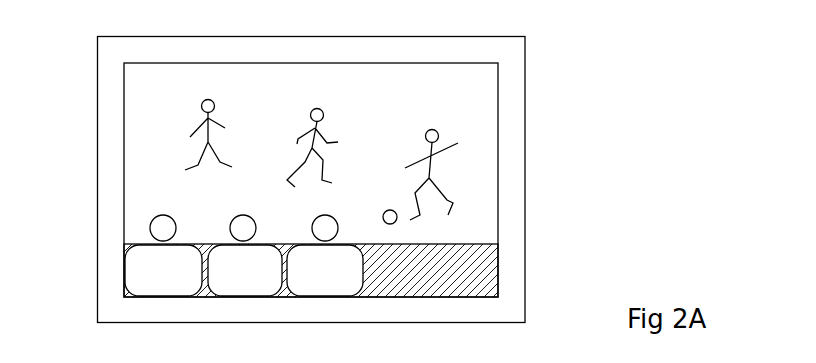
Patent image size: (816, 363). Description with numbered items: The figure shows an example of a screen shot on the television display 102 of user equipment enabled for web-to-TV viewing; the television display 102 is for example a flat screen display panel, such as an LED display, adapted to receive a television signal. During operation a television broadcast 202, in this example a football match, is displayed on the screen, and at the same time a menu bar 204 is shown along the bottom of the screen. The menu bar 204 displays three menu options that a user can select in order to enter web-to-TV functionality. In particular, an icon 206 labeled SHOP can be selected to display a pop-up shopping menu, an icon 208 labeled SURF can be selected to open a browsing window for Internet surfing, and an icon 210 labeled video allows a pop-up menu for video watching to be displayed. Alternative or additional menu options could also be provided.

The television display 102 is at (512, 83).
The television broadcast 202 is at (147, 113).
The menu bar 204 is at (462, 273).
The icon labeled SHOP 206 is at (172, 288).
The icon labeled SURF 208 is at (250, 288).
The icon labeled video 210 is at (325, 288).